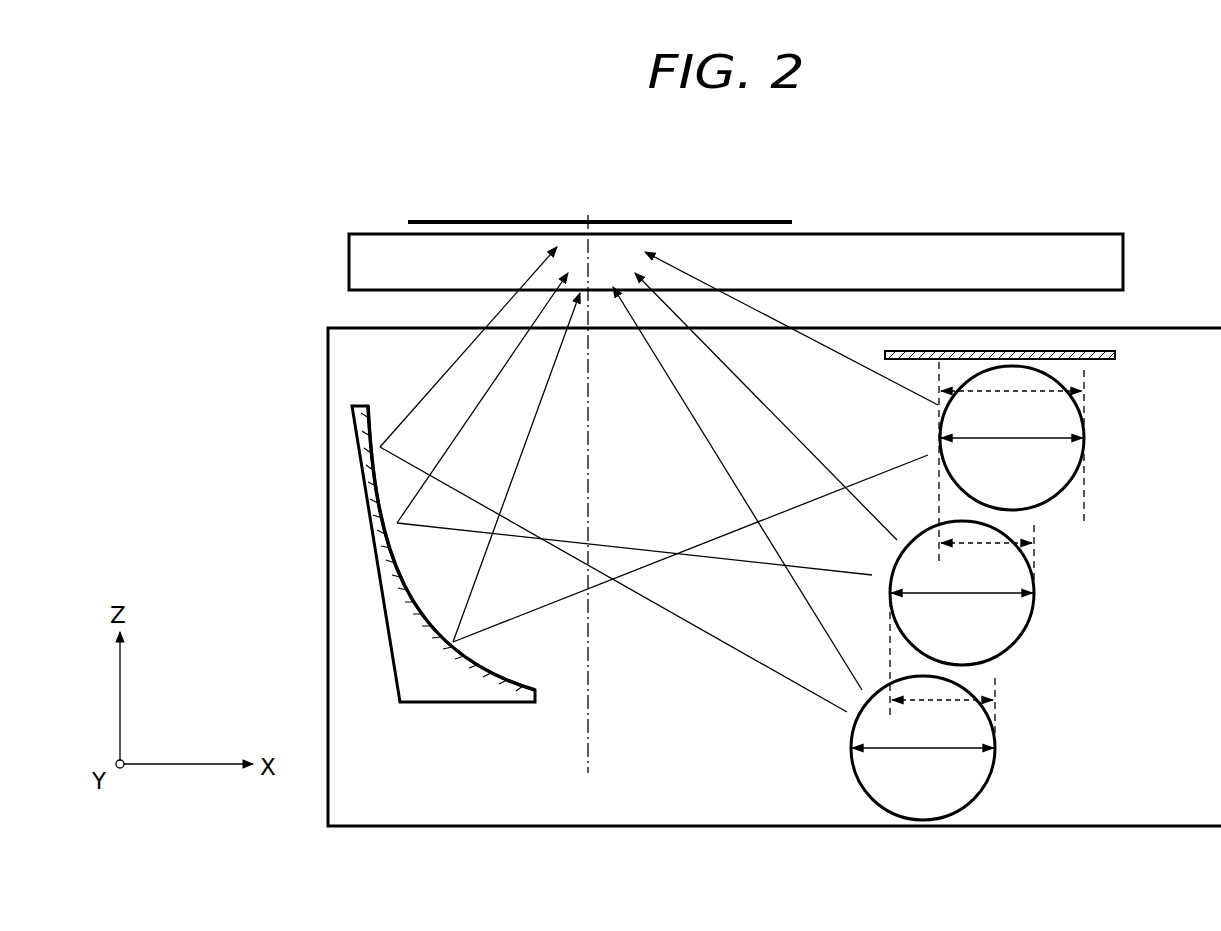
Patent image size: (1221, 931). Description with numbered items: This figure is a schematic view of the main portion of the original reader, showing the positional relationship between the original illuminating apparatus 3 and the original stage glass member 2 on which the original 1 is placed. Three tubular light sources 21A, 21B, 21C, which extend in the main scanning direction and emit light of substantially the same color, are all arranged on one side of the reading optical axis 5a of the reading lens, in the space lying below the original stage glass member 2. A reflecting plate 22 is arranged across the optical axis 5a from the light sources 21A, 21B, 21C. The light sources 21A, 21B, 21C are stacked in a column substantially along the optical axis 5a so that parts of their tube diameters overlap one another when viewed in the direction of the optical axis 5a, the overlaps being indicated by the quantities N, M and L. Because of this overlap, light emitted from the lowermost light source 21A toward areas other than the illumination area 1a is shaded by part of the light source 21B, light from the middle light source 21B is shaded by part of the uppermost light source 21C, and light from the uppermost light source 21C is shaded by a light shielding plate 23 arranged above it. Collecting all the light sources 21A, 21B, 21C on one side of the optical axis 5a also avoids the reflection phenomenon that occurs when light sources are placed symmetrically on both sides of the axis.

The original 1 is at (762, 221).
The illumination area 1a is at (595, 220).
The original stage glass member 2 is at (1020, 248).
The original illuminating apparatus 3 is at (1187, 328).
The optical axis 5a is at (588, 745).
The light source 21A is at (975, 780).
The light source 21B is at (1007, 640).
The light source 21C is at (1052, 490).
The reflecting plate 22 is at (438, 643).
The light shielding plate 23 is at (1116, 355).